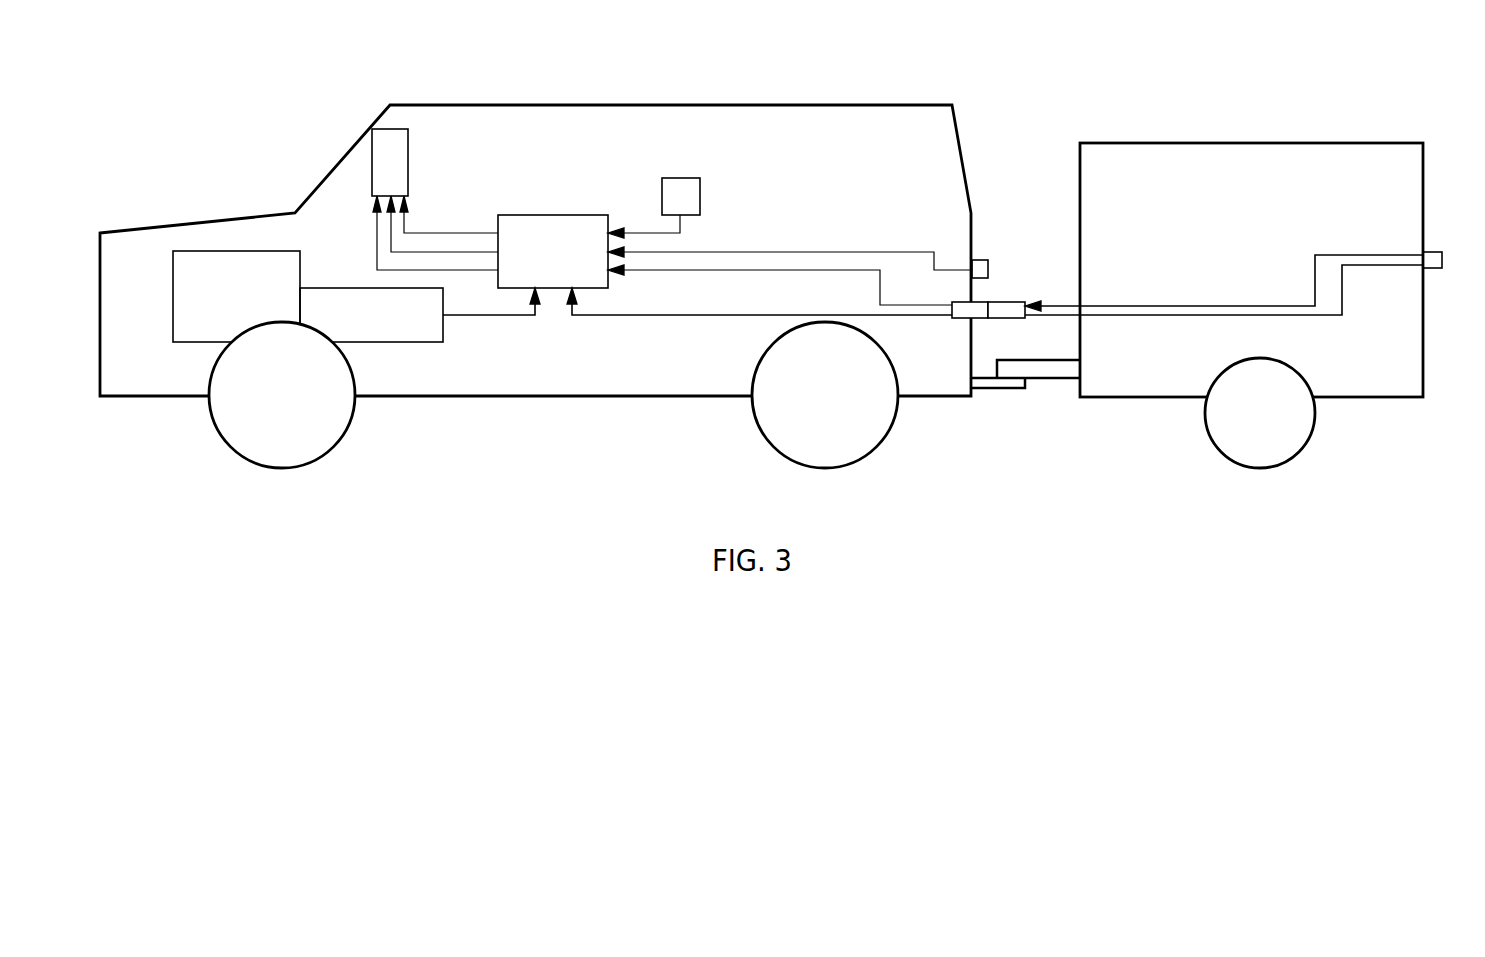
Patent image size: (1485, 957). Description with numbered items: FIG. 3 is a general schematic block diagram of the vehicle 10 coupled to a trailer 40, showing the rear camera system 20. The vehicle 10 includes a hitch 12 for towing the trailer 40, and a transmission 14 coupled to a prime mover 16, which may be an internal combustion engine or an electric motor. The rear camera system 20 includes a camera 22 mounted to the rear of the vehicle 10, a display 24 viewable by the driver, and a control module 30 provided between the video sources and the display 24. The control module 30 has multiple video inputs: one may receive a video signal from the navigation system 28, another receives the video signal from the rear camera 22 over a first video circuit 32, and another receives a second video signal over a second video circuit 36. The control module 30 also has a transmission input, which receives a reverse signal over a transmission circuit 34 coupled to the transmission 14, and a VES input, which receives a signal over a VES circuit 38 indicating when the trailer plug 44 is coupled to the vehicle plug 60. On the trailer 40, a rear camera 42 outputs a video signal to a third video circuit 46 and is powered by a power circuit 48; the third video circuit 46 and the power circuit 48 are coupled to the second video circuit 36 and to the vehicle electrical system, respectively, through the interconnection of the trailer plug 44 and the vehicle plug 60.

The vehicle 10 is at (962, 80).
The hitch 12 is at (1000, 389).
The transmission 14 is at (425, 343).
The prime mover 16 is at (173, 268).
The rear camera system 20 is at (847, 153).
The camera 22 is at (990, 260).
The display 24 is at (410, 160).
The navigation system 28 is at (702, 186).
The control module 30 is at (598, 214).
The first video circuit 32 is at (878, 252).
The transmission circuit 34 is at (507, 318).
The second video circuit 36 is at (905, 305).
The VES circuit 38 is at (610, 318).
The trailer 40 is at (1342, 115).
The rear camera 42 is at (1442, 254).
The trailer plug 44 is at (1025, 302).
The third video circuit 46 is at (1205, 307).
The power circuit 48 is at (1330, 316).
The vehicle plug 60 is at (951, 319).